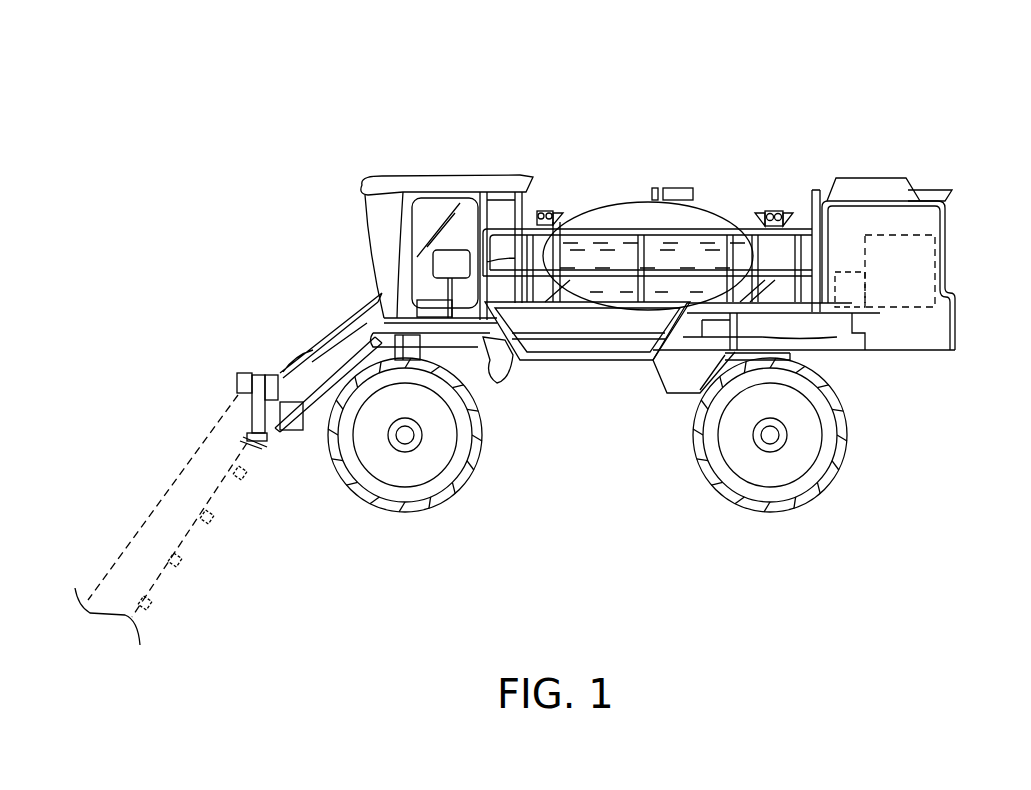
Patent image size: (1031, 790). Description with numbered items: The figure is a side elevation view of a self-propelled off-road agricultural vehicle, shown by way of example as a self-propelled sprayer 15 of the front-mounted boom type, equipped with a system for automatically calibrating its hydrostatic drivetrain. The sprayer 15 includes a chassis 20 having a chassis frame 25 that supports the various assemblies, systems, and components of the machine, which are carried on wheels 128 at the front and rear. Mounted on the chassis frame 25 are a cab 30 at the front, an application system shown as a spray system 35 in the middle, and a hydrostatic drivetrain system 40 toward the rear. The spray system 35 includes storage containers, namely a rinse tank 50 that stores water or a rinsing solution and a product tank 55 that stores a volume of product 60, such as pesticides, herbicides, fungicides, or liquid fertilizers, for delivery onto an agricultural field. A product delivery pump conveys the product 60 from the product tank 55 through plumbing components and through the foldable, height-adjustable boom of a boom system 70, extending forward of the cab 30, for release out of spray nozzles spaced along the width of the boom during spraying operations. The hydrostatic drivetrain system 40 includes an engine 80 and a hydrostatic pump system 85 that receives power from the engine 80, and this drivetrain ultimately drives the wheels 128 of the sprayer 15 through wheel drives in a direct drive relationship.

The self-propelled sprayer 15 is at (702, 68).
The chassis 20 is at (606, 368).
The chassis frame 25 is at (672, 392).
The cab 30 is at (445, 176).
The spray system 35 is at (731, 188).
The hydrostatic drivetrain system 40 is at (868, 318).
The rinse tank 50 is at (780, 205).
The product tank 55 is at (621, 191).
The product 60 is at (588, 256).
The boom system 70 is at (113, 523).
The engine 80 is at (908, 257).
The hydrostatic pump system 85 is at (848, 285).
The wheel 128 is at (448, 500).